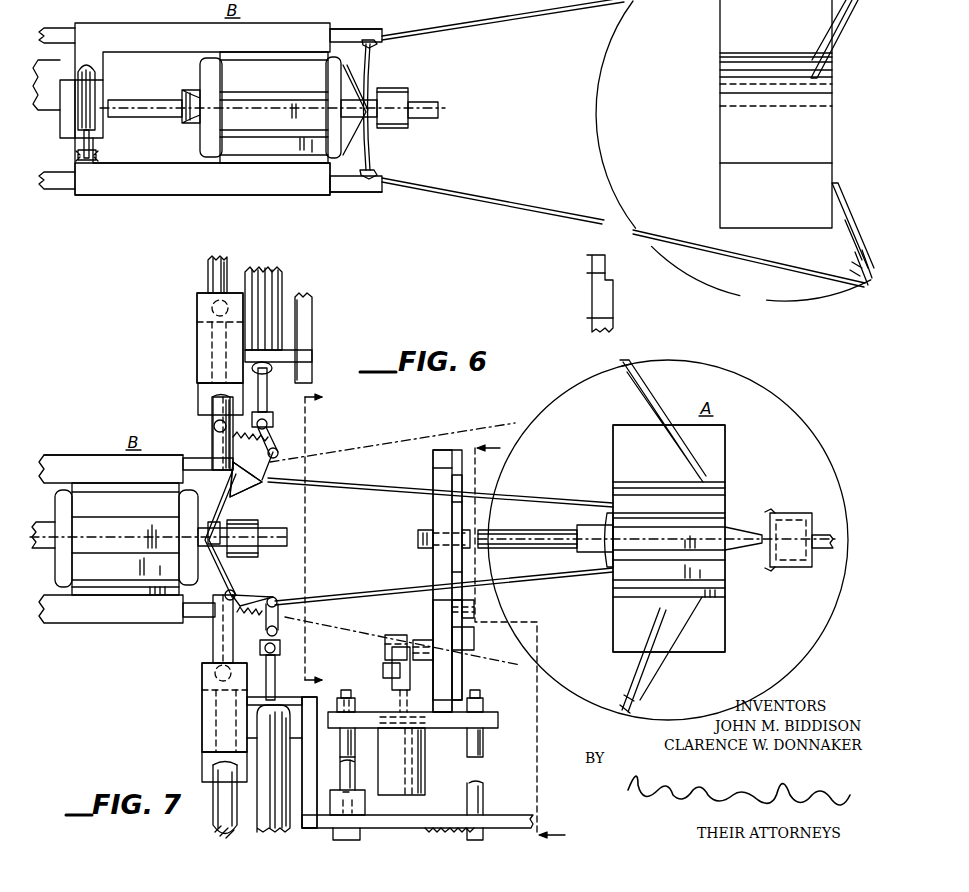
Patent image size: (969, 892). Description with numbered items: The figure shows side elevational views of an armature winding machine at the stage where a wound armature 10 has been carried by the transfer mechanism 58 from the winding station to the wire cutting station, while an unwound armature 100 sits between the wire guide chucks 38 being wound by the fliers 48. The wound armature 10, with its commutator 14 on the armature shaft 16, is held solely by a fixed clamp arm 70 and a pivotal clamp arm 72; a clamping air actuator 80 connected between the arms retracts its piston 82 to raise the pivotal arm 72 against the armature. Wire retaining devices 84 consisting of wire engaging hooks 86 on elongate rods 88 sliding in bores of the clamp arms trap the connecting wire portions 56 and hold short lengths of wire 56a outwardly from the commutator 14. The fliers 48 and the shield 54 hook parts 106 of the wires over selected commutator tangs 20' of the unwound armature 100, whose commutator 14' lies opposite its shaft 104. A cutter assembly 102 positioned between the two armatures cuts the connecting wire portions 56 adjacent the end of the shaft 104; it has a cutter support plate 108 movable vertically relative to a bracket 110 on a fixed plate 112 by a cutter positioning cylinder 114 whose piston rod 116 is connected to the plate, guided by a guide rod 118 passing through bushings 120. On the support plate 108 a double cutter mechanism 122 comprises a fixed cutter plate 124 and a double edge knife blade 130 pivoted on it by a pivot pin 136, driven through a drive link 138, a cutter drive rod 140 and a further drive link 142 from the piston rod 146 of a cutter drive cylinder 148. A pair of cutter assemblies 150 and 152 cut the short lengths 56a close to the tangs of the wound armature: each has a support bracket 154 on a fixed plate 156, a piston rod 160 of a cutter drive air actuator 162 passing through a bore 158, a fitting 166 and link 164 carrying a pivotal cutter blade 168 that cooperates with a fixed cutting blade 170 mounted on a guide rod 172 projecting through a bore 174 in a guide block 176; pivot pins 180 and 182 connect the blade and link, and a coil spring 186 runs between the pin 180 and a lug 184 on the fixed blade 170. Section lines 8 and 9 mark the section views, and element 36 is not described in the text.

In FIG. 6, the armature 10 is at (285, 32).
In FIG. 7, the armature 10 is at (109, 495).
In FIG. 6, the commutator 14 is at (393, 100).
In FIG. 7, the armature shaft 16 is at (273, 542).
In FIG. 6, the motor end cap 36 is at (370, 63).
In FIG. 6, the wire guide chucks 38 is at (720, 30).
In FIG. 7, the wire guide chucks 38 is at (716, 455).
In FIG. 6, the fliers 48 is at (843, 22).
In FIG. 7, the fliers 48 is at (639, 379).
In FIG. 6, the connecting wire portions 56 is at (513, 12).
In FIG. 7, the connecting wire portions 56 is at (368, 482).
In FIG. 6, the short lengths of wire 56a is at (372, 61).
In FIG. 7, the short lengths of wire 56a is at (224, 520).
In FIG. 7, the transfer mechanism 58 is at (66, 644).
In FIG. 6, the fixed clamp arm 70 is at (192, 32).
In FIG. 6, the pivotal clamp arm 72 is at (131, 190).
In FIG. 6, the clamping air actuator 80 is at (98, 83).
In FIG. 6, the piston 82 is at (94, 138).
In FIG. 6, the wire retaining devices 84 is at (390, 23).
In FIG. 6, the wire engaging hooks 86 is at (378, 174).
In FIG. 6, the elongate rods 88 is at (349, 32).
In FIG. 7, the unwound armature 100 is at (613, 499).
In FIG. 6, the cutter assembly 102 is at (620, 305).
In FIG. 7, the cutter assembly 102 is at (427, 572).
In FIG. 7, the shaft 104 is at (543, 543).
In FIG. 7, the parts of the wires 106 is at (721, 520).
In FIG. 7, the cutter support plate 108 is at (495, 714).
In FIG. 7, the bracket 110 is at (514, 813).
In FIG. 7, the plate 112 is at (311, 772).
In FIG. 7, the cutter positioning cylinder 114 is at (445, 834).
In FIG. 7, the piston rod 116 is at (483, 746).
In FIG. 7, the guide rod 118 is at (358, 729).
In FIG. 7, the bushings 120 is at (366, 797).
In FIG. 7, the double cutter mechanism 122 is at (442, 449).
In FIG. 7, the fixed cutter plate 124 is at (453, 683).
In FIG. 7, the double edge knife blade 130 is at (454, 511).
In FIG. 7, the pivot pin 136 is at (418, 539).
In FIG. 7, the drive link 138 is at (470, 633).
In FIG. 7, the cutter drive rod 140 is at (424, 640).
In FIG. 7, the drive link 142 is at (384, 639).
In FIG. 7, the piston rod 146 is at (396, 682).
In FIG. 7, the cutter drive cylinder 148 is at (420, 770).
In FIG. 7, the cutter assembly 150 is at (166, 360).
In FIG. 7, the cutter assembly 152 is at (184, 697).
In FIG. 7, the support bracket 154 is at (289, 298).
In FIG. 7, the plate 156 is at (326, 340).
In FIG. 7, the bore 158 is at (272, 368).
In FIG. 7, the piston rod 160 is at (272, 398).
In FIG. 7, the cutter drive air actuator 162 is at (266, 272).
In FIG. 7, the link 164 is at (285, 445).
In FIG. 7, the fitting 166 is at (276, 420).
In FIG. 7, the pivotal cutter blade 168 is at (258, 486).
In FIG. 7, the fixed cutting blade 170 is at (216, 447).
In FIG. 7, the guide rod 172 is at (208, 277).
In FIG. 7, the bore 174 is at (215, 337).
In FIG. 7, the guide block 176 is at (197, 306).
In FIG. 7, the pivot pin 180 is at (274, 476).
In FIG. 7, the pivot pin 182 is at (280, 423).
In FIG. 7, the lug 184 is at (210, 428).
In FIG. 7, the coil spring 186 is at (212, 429).
In FIG. 7, the commutator tangs 20' is at (801, 529).
In FIG. 7, the commutator 14' is at (799, 562).
In FIG. 7, the shield 54 is at (795, 518).
In FIG. 7, the section line 8- 8 is at (513, 639).
In FIG. 7, the section line 9- 9 is at (305, 538).